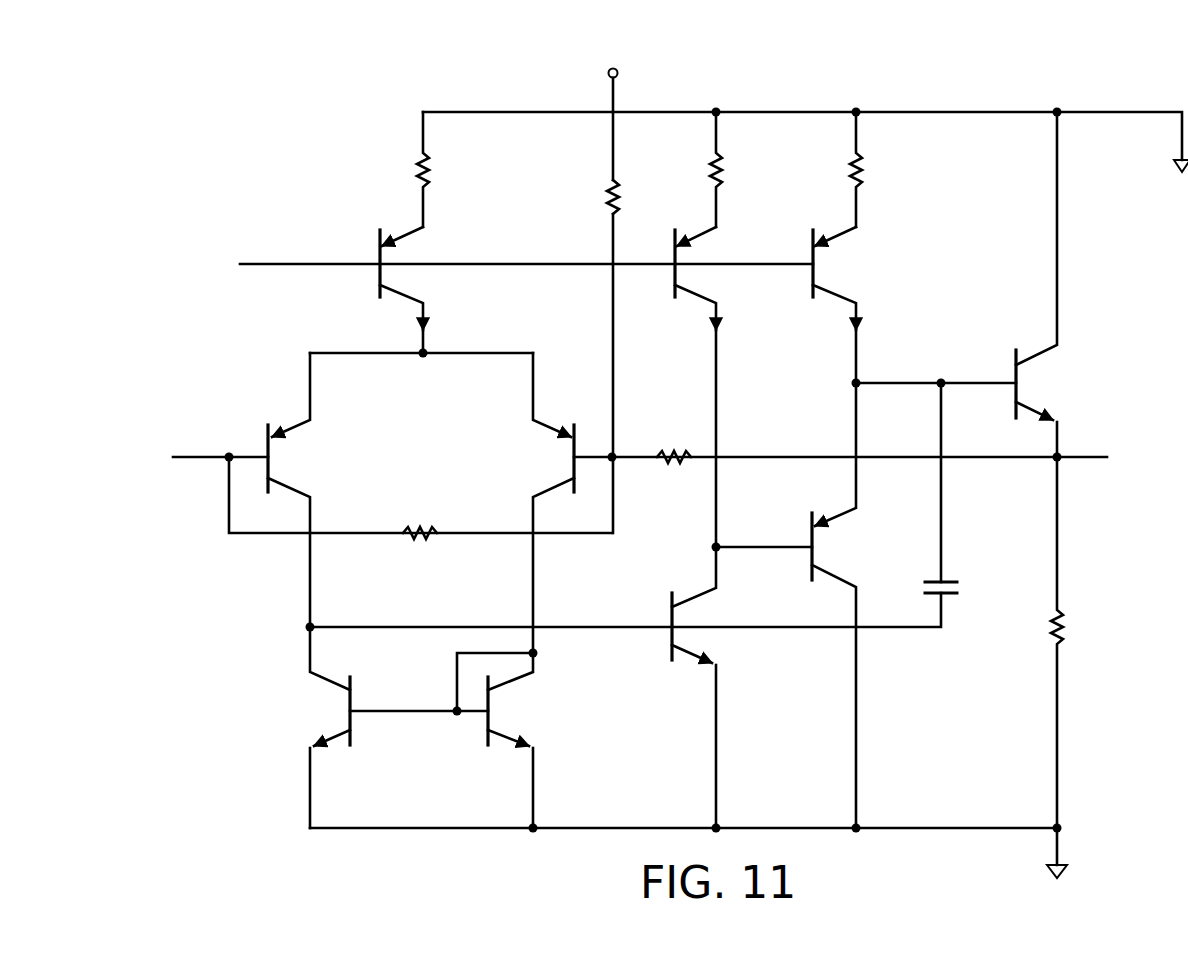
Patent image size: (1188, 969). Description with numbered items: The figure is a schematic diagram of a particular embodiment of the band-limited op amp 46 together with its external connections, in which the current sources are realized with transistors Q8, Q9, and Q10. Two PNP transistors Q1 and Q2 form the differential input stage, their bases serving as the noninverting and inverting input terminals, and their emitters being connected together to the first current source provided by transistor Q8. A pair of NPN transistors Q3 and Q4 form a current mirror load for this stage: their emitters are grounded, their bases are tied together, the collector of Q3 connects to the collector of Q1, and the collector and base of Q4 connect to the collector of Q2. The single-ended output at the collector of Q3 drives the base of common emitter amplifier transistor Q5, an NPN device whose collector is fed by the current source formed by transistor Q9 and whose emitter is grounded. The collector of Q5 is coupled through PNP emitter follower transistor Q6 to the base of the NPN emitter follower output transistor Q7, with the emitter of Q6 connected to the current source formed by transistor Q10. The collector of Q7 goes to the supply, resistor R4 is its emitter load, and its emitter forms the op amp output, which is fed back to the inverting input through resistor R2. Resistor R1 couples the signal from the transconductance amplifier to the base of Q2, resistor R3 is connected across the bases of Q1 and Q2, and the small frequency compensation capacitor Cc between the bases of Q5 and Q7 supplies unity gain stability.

The band-limited op amp 46 is at (222, 386).
The PNP input transistor Q1 is at (279, 490).
The PNP input transistor Q2 is at (561, 503).
The NPN current mirror transistor Q3 is at (373, 727).
The NPN current mirror transistor Q4 is at (503, 740).
The common emitter amplifier transistor Q5 is at (706, 687).
The emitter follower transistor Q6 is at (792, 605).
The emitter follower output transistor Q7 is at (1048, 284).
The current source transistor Q8 is at (409, 232).
The current source transistor Q9 is at (704, 329).
The current source transistor Q10 is at (848, 247).
The resistor R1 is at (631, 197).
The feedback resistor R2 is at (674, 444).
The resistor R3 is at (421, 520).
The emitter load resistor R4 is at (1074, 661).
The frequency compensation capacitor Cc is at (956, 494).